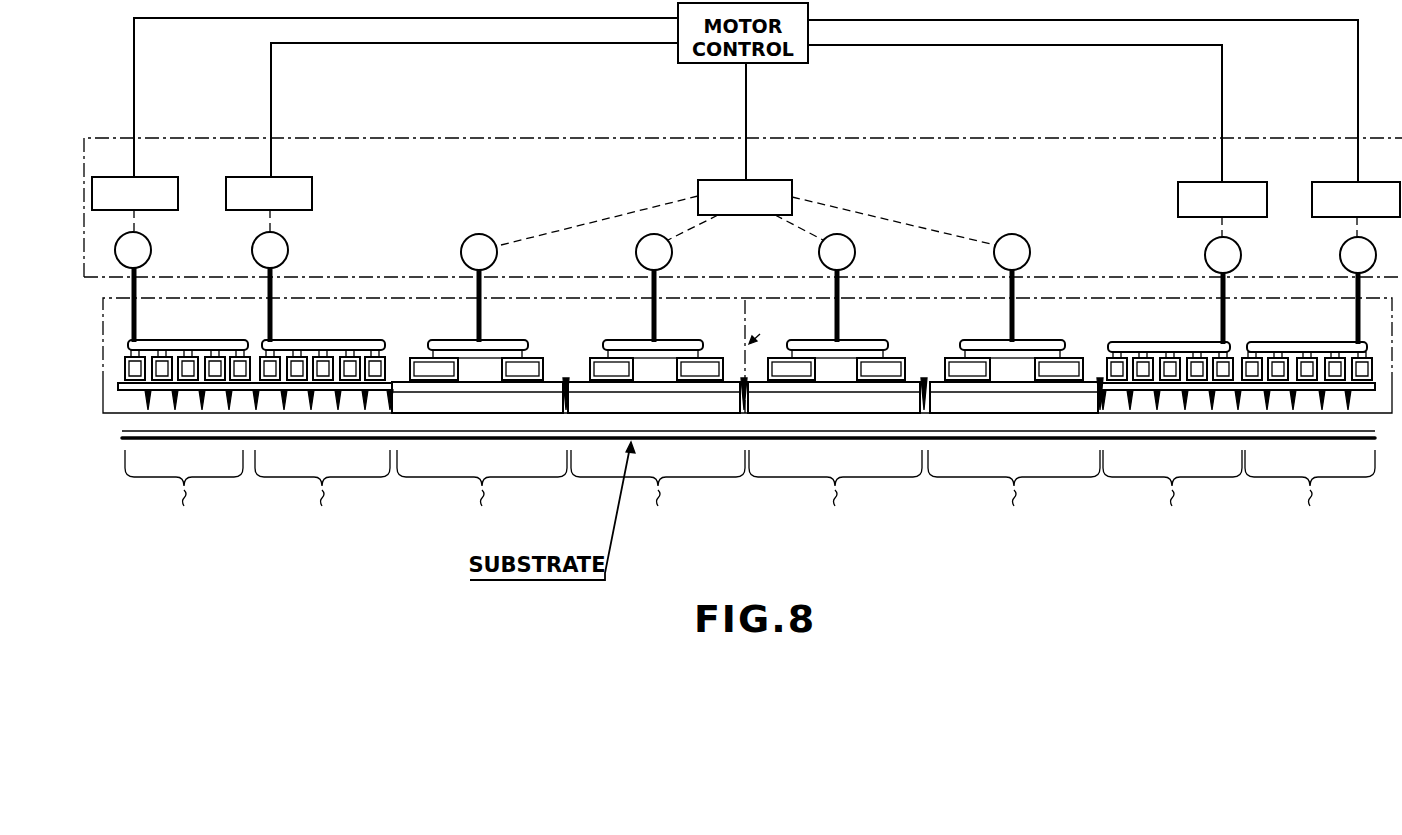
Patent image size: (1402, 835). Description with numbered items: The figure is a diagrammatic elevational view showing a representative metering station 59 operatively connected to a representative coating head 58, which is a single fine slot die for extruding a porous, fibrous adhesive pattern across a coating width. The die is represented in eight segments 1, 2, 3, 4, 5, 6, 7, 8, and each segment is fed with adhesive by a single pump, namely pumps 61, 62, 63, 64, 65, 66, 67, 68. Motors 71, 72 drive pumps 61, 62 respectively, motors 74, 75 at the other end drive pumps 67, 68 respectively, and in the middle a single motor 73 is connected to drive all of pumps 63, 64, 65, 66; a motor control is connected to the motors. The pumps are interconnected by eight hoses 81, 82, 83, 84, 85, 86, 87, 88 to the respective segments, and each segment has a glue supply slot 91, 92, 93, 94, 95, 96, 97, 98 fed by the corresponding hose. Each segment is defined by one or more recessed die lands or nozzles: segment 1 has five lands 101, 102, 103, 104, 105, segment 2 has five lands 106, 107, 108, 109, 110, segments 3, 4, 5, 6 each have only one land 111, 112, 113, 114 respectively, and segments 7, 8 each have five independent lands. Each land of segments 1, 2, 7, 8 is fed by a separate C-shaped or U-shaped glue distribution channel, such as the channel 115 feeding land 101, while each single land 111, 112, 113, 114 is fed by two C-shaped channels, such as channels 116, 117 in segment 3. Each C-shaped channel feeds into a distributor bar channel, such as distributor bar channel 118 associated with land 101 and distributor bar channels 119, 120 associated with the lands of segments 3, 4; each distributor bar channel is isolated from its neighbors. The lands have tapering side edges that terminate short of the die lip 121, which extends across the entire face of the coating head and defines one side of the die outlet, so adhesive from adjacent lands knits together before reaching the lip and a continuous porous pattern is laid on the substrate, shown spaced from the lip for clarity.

The coating head 58 is at (394, 298).
The metering station 59 is at (452, 130).
The pump 61 is at (150, 243).
The pump 62 is at (284, 240).
The pump 63 is at (488, 238).
The pump 64 is at (672, 250).
The pump 65 is at (848, 237).
The pump 66 is at (1022, 237).
The pump 67 is at (1206, 256).
The pump 68 is at (1341, 256).
The motor 71 is at (178, 177).
The motor 72 is at (296, 177).
The motor 73 is at (766, 180).
The motor 74 is at (1248, 182).
The motor 75 is at (1335, 182).
The hose 81 is at (150, 283).
The hose 82 is at (288, 283).
The hose 83 is at (498, 312).
The hose 84 is at (658, 300).
The hose 85 is at (848, 298).
The hose 86 is at (1022, 298).
The hose 87 is at (1218, 293).
The hose 88 is at (1350, 293).
The glue supply slot 91 is at (200, 340).
The glue supply slot 92 is at (340, 340).
The glue supply slot 93 is at (508, 340).
The glue supply slot 94 is at (688, 340).
The glue supply slot 95 is at (868, 340).
The glue supply slot 96 is at (1044, 340).
The glue supply slot 97 is at (1160, 342).
The glue supply slot 98 is at (1300, 342).
The land 101 is at (135, 408).
The land 102 is at (175, 415).
The land 103 is at (202, 418).
The land 104 is at (229, 415).
The land 105 is at (256, 418).
The land 106 is at (284, 415).
The land 107 is at (311, 418).
The land 108 is at (338, 415).
The land 109 is at (365, 418).
The land 110 is at (392, 415).
The land 111 is at (477, 397).
The land 112 is at (654, 397).
The land 113 is at (834, 397).
The land 114 is at (1014, 397).
The glue distribution channel 115 is at (143, 345).
The glue distribution channel 116 is at (403, 352).
The glue distribution channel 117 is at (545, 356).
The distributor bar channel 118 is at (150, 415).
The distributor bar channel 119 is at (513, 388).
The distributor bar channel 120 is at (718, 388).
The die lip 121 is at (800, 424).
The segment 1 is at (184, 493).
The segment 2 is at (322, 493).
The segment 3 is at (482, 493).
The segment 4 is at (658, 493).
The segment 5 is at (835, 493).
The segment 6 is at (1014, 493).
The segment 7 is at (1172, 493).
The segment 8 is at (1310, 493).